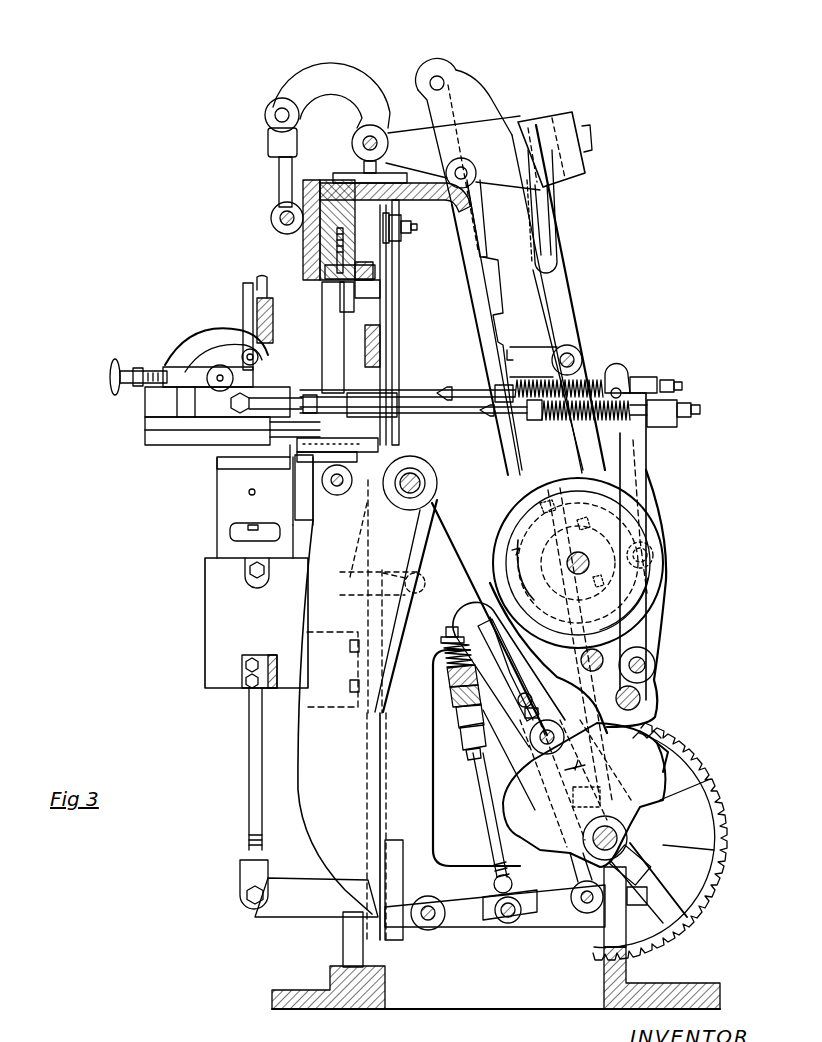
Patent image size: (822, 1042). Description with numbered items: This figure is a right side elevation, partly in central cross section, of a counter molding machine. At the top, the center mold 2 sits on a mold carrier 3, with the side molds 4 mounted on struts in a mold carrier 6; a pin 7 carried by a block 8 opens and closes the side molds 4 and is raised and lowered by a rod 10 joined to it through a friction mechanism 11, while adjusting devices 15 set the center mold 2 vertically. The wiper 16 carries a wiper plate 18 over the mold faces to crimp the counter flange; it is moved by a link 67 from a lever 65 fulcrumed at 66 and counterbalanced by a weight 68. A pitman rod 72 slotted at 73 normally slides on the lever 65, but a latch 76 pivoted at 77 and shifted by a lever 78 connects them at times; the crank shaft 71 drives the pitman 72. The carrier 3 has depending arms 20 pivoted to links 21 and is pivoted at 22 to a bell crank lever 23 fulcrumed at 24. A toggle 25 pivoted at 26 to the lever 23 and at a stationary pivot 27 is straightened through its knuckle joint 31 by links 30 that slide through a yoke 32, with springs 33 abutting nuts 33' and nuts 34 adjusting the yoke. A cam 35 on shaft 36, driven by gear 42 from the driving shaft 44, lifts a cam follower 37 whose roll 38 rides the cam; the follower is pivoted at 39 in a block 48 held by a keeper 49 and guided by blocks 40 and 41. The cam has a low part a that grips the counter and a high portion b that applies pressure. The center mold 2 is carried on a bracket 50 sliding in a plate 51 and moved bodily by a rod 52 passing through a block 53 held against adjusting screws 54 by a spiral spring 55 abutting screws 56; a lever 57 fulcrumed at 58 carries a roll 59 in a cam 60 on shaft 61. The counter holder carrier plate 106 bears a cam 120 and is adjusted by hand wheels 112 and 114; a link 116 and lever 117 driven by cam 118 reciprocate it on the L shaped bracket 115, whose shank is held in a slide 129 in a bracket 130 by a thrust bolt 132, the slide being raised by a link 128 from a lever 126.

The lever 65 is at (330, 70).
The fulcrum 66 is at (373, 136).
The link 67 is at (280, 167).
The wiper 16 is at (303, 192).
The mold carrier 6 is at (337, 256).
The wiper plate 18 is at (330, 270).
The plate 106 is at (250, 320).
The cam 120 is at (228, 338).
The hand wheel 112 is at (113, 362).
The hand wheel 114 is at (212, 390).
The L shaped bracket 115 is at (148, 440).
The plate 51 is at (283, 437).
The thrust bolt 132 is at (230, 535).
The slide 129 is at (222, 555).
The bracket 130 is at (207, 642).
The link 128 is at (249, 750).
The lever 126 is at (298, 910).
The bell crank lever 23 is at (412, 535).
The pivot 77 is at (440, 80).
The latch 76 is at (493, 113).
The weight 68 is at (556, 118).
The friction mechanism 11 is at (403, 226).
The block 8 is at (373, 272).
The pin 7 is at (380, 290).
The side molds 4 is at (340, 300).
The center mold 2 is at (334, 350).
The rod 10 is at (399, 322).
The bracket 50 is at (352, 400).
The link 116 is at (442, 389).
The adjusting devices 15 is at (378, 447).
The rod 52 is at (458, 415).
The adjusting screws 56 is at (538, 400).
The spiral spring 55 is at (578, 422).
The slot 73 is at (482, 232).
The lever 78 is at (562, 296).
The lever 117 is at (616, 372).
The adjusting screws 54 is at (684, 388).
The block 53 is at (672, 412).
The lever 57 is at (640, 482).
The pitman rod 72 is at (535, 476).
The fulcrum 24 is at (425, 483).
The links 21 is at (423, 558).
The shaft 61 is at (590, 559).
The cam 118 is at (668, 556).
The roll 59 is at (648, 568).
The cam 60 is at (642, 600).
The shaft 71 is at (603, 657).
The fulcrum 58 is at (655, 664).
The driving shaft 44 is at (640, 697).
The low part of cam a is at (652, 735).
The cam follower 37 is at (560, 700).
The nuts 33' is at (435, 627).
The springs 33 is at (434, 650).
The yoke 32 is at (446, 666).
The block 48 is at (455, 682).
The pivot pin 39 is at (455, 700).
The keeper 49 is at (458, 718).
The block 41 is at (538, 702).
The roll 38 is at (545, 740).
The nuts 34 is at (465, 752).
The high portion of cam b is at (520, 775).
The block 40 is at (630, 786).
The cam 35 is at (668, 782).
The shaft 36 is at (628, 833).
The gear 42 is at (726, 850).
The links 30 is at (490, 830).
The toggle 25 is at (468, 929).
The pivot 26 is at (428, 931).
The knuckle joint 31 is at (510, 925).
The stationary pivot 27 is at (588, 914).
The mold carrier 3 is at (297, 461).
The pivot 22 is at (322, 481).
The depending arms 20 is at (305, 507).